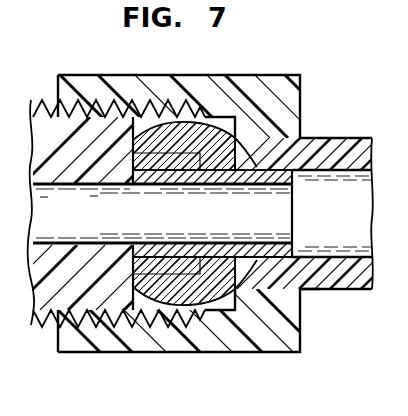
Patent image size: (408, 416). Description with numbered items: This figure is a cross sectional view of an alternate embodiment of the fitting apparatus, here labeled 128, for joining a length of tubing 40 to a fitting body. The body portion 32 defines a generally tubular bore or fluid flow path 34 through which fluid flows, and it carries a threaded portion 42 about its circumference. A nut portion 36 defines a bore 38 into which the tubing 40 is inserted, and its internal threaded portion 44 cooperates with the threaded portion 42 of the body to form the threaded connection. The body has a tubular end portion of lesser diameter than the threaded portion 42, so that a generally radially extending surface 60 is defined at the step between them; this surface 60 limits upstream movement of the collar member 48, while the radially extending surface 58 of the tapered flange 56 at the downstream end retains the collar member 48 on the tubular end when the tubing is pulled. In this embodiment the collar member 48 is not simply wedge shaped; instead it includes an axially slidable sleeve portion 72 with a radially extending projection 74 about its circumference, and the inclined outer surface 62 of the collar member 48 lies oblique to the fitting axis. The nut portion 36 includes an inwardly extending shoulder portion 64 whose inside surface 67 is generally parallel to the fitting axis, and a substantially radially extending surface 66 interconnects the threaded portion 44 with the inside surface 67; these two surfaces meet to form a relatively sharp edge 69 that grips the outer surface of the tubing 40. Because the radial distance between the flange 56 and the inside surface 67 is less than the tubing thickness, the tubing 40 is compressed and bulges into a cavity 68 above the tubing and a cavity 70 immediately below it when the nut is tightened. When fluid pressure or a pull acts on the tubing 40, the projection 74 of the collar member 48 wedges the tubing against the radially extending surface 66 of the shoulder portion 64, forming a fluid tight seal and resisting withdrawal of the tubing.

The fitting assembly 128 is at (85, 14).
The body portion 32 is at (33, 117).
The fluid flow path 34 is at (82, 230).
The nut portion 36 is at (92, 92).
The bore 38 is at (304, 290).
The tubing 40 is at (354, 137).
The threaded portion 42 is at (47, 320).
The threaded portion 44 is at (137, 108).
The collar member 48 is at (145, 176).
The flange 56 is at (257, 296).
The radially extending surface 58 is at (252, 167).
The radially extending surface 60 is at (125, 342).
The outer surface 62 is at (163, 292).
The shoulder portion 64 is at (285, 142).
The radially extending surface 66 is at (212, 334).
The inside surface 67 is at (303, 172).
The cavity 68 is at (208, 320).
The edge 69 is at (235, 290).
The cavity 70 is at (219, 174).
The sleeve portion 72 is at (153, 257).
The radially extending projection 74 is at (179, 172).